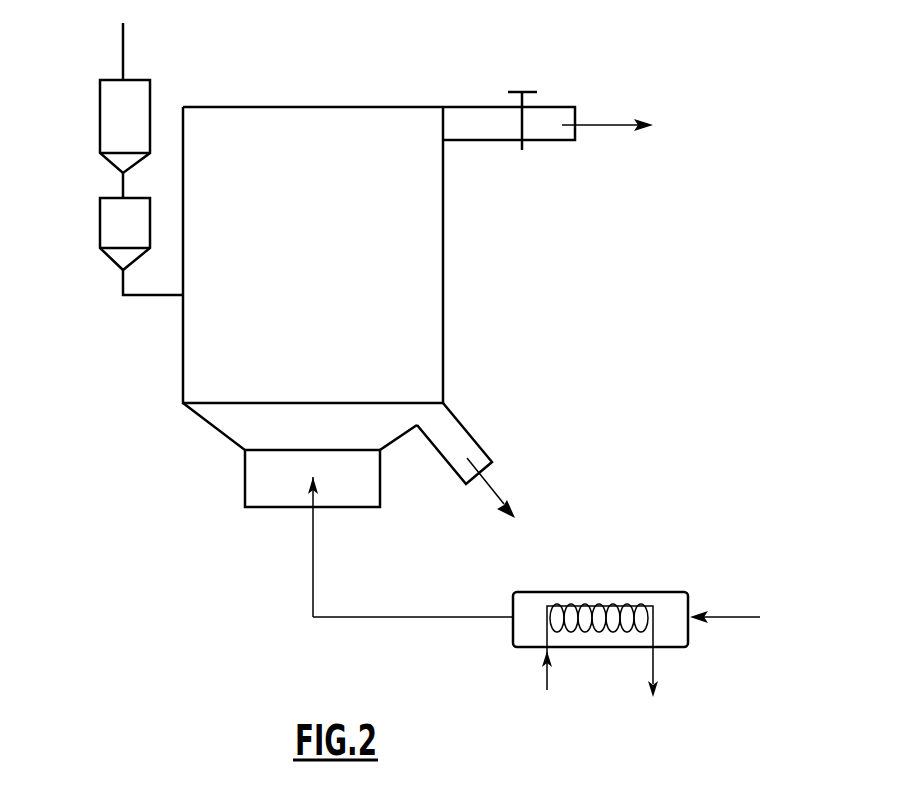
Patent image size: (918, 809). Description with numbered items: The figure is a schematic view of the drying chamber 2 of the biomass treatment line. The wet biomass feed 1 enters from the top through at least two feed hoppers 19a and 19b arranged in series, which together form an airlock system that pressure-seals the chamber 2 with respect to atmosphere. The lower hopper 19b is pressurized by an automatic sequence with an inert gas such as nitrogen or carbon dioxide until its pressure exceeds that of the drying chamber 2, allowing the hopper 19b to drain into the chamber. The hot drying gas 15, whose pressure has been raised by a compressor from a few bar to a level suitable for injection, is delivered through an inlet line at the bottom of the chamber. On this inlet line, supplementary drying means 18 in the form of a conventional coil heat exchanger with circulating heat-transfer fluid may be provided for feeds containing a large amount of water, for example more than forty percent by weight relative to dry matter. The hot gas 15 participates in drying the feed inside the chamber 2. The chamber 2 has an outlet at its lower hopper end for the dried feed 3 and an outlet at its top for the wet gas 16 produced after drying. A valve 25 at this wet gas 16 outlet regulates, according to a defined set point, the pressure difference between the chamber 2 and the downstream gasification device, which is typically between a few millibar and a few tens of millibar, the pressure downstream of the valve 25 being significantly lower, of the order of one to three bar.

The wet biomass feed 1 is at (123, 52).
The feed hopper 19a is at (110, 112).
The feed hopper 19b is at (110, 218).
The drying chamber 2 is at (393, 302).
The valve 25 is at (515, 90).
The wet gas 16 is at (613, 118).
The dried feed 3 is at (498, 488).
The supplementary drying means 18 is at (665, 607).
The hot drying gas 15 is at (725, 617).